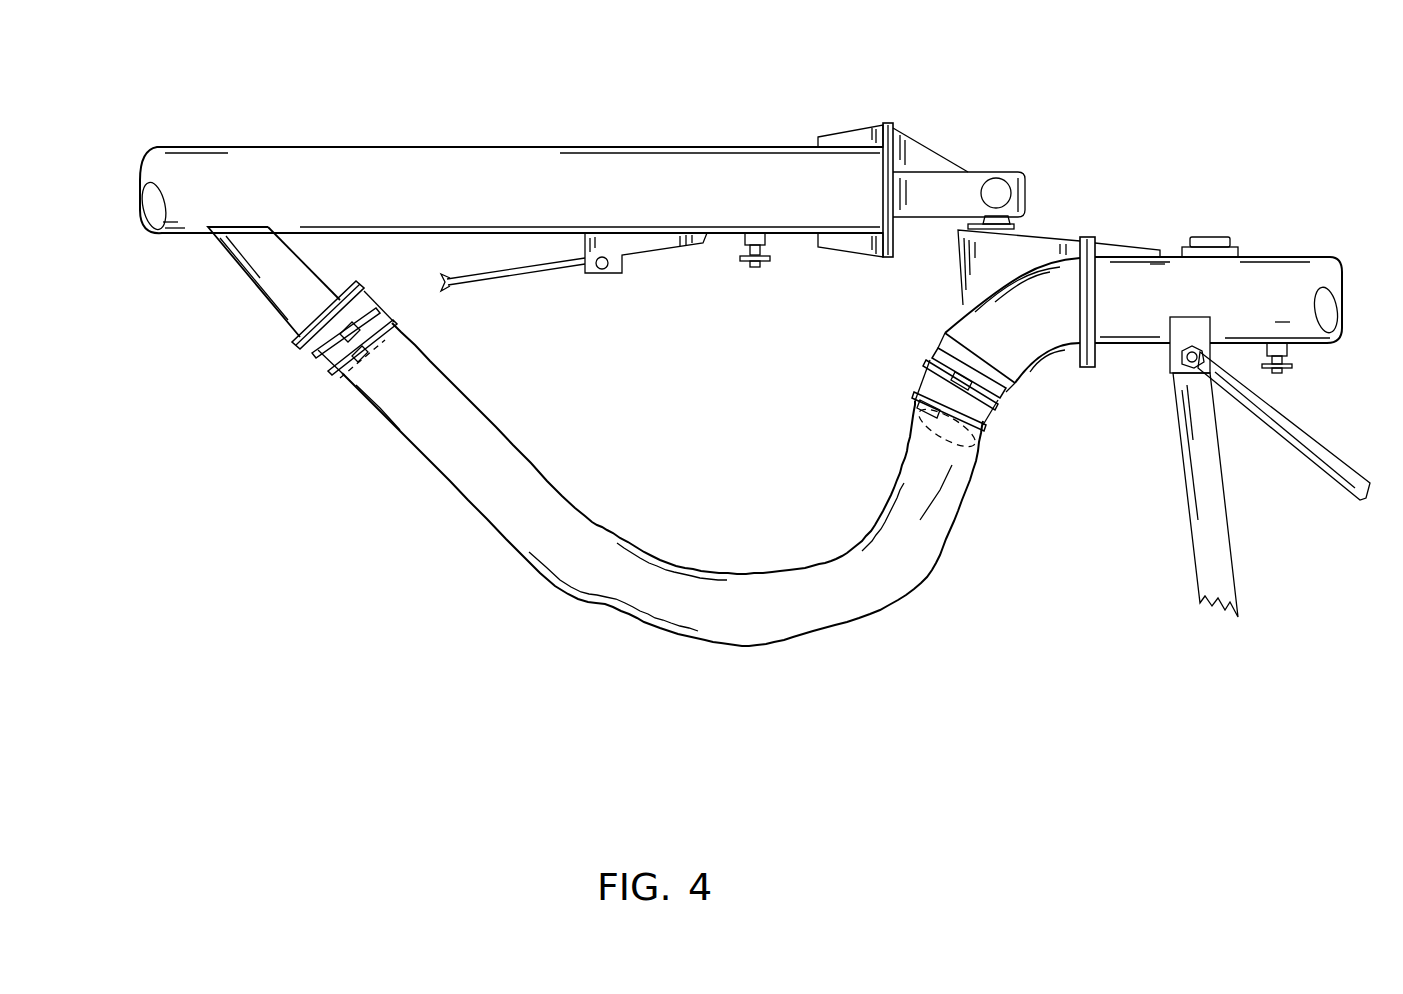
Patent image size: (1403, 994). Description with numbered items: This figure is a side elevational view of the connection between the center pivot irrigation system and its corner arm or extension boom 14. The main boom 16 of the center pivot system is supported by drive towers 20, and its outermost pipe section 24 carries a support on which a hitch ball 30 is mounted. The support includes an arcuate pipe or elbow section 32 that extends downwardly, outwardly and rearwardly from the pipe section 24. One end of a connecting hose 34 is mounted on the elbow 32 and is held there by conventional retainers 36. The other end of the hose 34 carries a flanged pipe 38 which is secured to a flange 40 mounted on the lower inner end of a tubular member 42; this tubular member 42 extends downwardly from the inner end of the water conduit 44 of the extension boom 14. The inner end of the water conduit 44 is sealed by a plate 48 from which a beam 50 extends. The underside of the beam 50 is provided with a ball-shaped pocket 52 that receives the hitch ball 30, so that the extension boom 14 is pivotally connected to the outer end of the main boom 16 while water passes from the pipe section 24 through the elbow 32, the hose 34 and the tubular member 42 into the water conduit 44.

The extension boom 14 is at (650, 105).
The main boom 16 is at (1260, 210).
The drive tower 20 is at (1225, 547).
The outermost pipe section 24 is at (1267, 283).
The hitch ball 30 is at (966, 209).
The elbow section 32 is at (912, 410).
The connecting hose 34 is at (603, 548).
The retainers 36 is at (313, 355).
The flanged pipe 38 is at (362, 292).
The flange 40 is at (297, 335).
The tubular member 42 is at (307, 275).
The water conduit 44 is at (752, 165).
The plate 48 is at (897, 127).
The beam 50 is at (968, 183).
The ball-shaped pocket 52 is at (1030, 200).